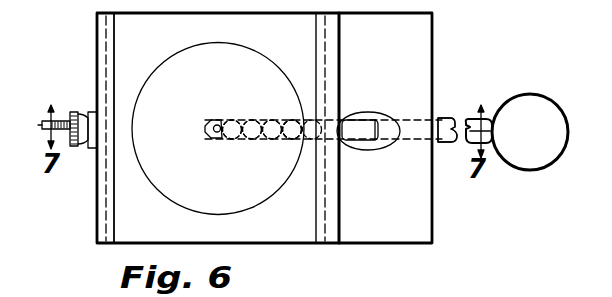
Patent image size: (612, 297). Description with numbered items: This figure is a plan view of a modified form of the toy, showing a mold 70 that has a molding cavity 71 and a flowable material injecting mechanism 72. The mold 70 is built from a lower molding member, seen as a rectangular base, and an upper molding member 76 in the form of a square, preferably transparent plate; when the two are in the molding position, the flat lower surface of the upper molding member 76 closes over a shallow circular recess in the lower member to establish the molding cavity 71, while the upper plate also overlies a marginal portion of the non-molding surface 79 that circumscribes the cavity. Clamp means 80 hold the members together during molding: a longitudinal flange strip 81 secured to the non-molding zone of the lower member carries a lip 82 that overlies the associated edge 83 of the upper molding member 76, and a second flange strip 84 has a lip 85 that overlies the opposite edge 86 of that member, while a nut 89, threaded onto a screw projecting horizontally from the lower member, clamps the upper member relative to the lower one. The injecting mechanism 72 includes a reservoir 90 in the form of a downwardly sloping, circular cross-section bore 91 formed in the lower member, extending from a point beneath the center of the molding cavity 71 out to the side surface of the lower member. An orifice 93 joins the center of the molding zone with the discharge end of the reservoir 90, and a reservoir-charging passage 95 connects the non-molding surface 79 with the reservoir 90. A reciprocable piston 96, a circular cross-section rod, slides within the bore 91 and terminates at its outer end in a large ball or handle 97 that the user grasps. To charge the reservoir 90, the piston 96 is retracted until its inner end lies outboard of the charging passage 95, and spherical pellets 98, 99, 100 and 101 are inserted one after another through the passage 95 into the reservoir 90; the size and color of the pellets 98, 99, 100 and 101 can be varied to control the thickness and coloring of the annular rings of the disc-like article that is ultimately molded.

The mold 70 is at (437, 222).
The molding cavity 71 is at (272, 198).
The flowable material injecting mechanism 72 is at (447, 143).
The upper molding member 76 is at (262, 229).
The non-molding surface 79 is at (398, 222).
The clamp means 80 is at (82, 110).
The longitudinal flange strip 81 is at (342, 194).
The lip 82 is at (316, 244).
The edge 83 is at (329, 246).
The flange strip 84 is at (104, 227).
The lip 85 is at (113, 200).
The edge 86 is at (100, 177).
The nut 89 is at (70, 113).
The reservoir 90 is at (257, 140).
The bore 91 is at (286, 140).
The orifice 93 is at (214, 140).
The reservoir-charging passage 95 is at (384, 125).
The piston 96 is at (446, 118).
The ball or handle 97 is at (521, 108).
The spherical pellet 98 is at (230, 119).
The spherical pellet 99 is at (252, 120).
The spherical pellet 100 is at (270, 119).
The spherical pellet 101 is at (292, 119).